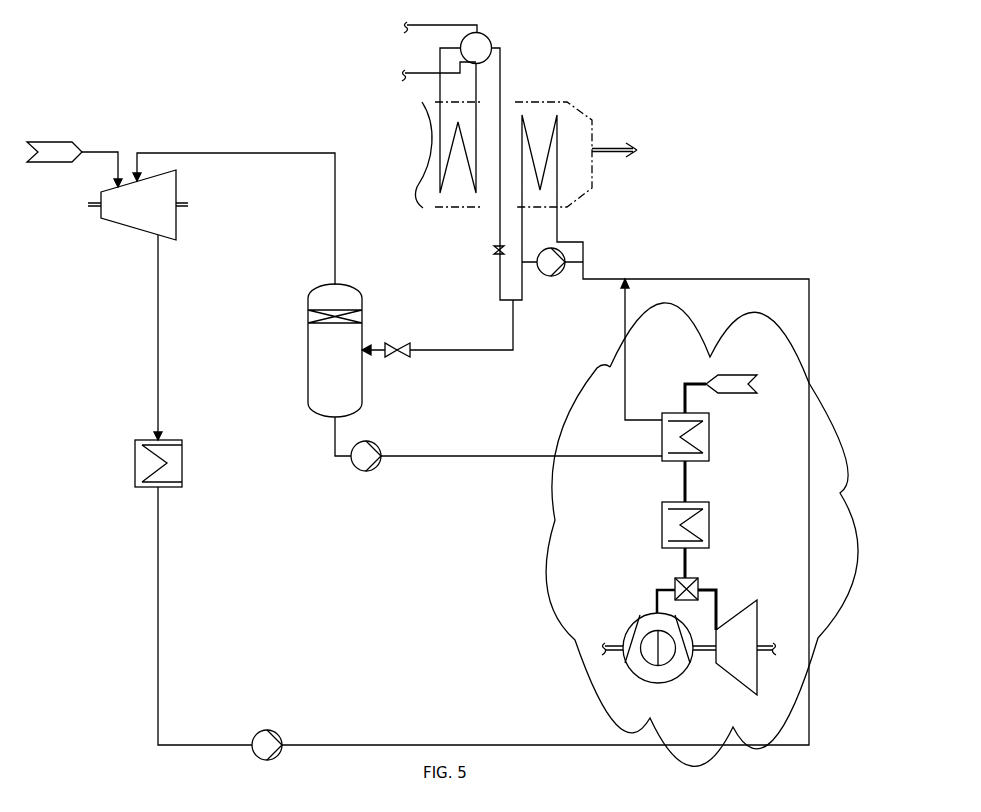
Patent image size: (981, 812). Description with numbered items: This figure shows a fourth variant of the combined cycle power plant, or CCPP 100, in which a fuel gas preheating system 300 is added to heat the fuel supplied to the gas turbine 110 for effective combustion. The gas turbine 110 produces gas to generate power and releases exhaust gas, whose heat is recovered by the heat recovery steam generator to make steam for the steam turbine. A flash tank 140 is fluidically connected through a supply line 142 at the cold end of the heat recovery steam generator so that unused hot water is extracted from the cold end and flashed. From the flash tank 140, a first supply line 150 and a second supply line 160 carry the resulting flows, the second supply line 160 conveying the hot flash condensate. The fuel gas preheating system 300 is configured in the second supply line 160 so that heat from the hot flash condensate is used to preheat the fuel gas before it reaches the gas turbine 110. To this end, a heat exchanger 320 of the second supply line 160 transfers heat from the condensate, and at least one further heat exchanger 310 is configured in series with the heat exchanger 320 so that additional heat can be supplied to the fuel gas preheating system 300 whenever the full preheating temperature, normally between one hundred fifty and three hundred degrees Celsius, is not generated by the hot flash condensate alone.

The combined cycle power plant 100 is at (729, 161).
The gas turbine 110 is at (605, 672).
The flash tank 140 is at (305, 290).
The supply line 142 is at (437, 337).
The first supply line 150 is at (253, 219).
The second supply line 160 is at (498, 449).
The fuel gas preheating system 300 is at (820, 377).
The heat exchanger 310 is at (720, 522).
The heat exchanger of the second supply line 320 is at (723, 445).